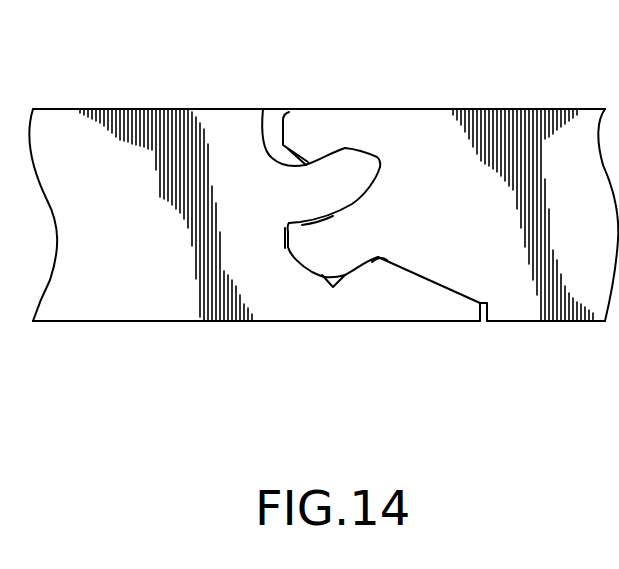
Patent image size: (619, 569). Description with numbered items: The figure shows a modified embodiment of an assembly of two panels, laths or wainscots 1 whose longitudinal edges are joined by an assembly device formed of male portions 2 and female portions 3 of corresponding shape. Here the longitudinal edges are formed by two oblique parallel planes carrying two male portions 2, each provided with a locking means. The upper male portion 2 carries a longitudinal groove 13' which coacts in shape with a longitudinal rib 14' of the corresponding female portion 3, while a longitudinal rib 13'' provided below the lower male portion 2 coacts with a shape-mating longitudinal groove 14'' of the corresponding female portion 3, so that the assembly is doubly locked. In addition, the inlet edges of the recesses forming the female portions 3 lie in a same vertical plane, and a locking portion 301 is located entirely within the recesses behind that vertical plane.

The panel, lath or wainscot 1 is at (131, 109).
The male portion 2 is at (345, 173).
The female portion 3 is at (362, 160).
The longitudinal groove 13' is at (300, 95).
The longitudinal rib 14' is at (276, 104).
The longitudinal rib 13'' is at (293, 354).
The longitudinal groove 14'' is at (416, 314).
The locking portion 301 is at (338, 278).